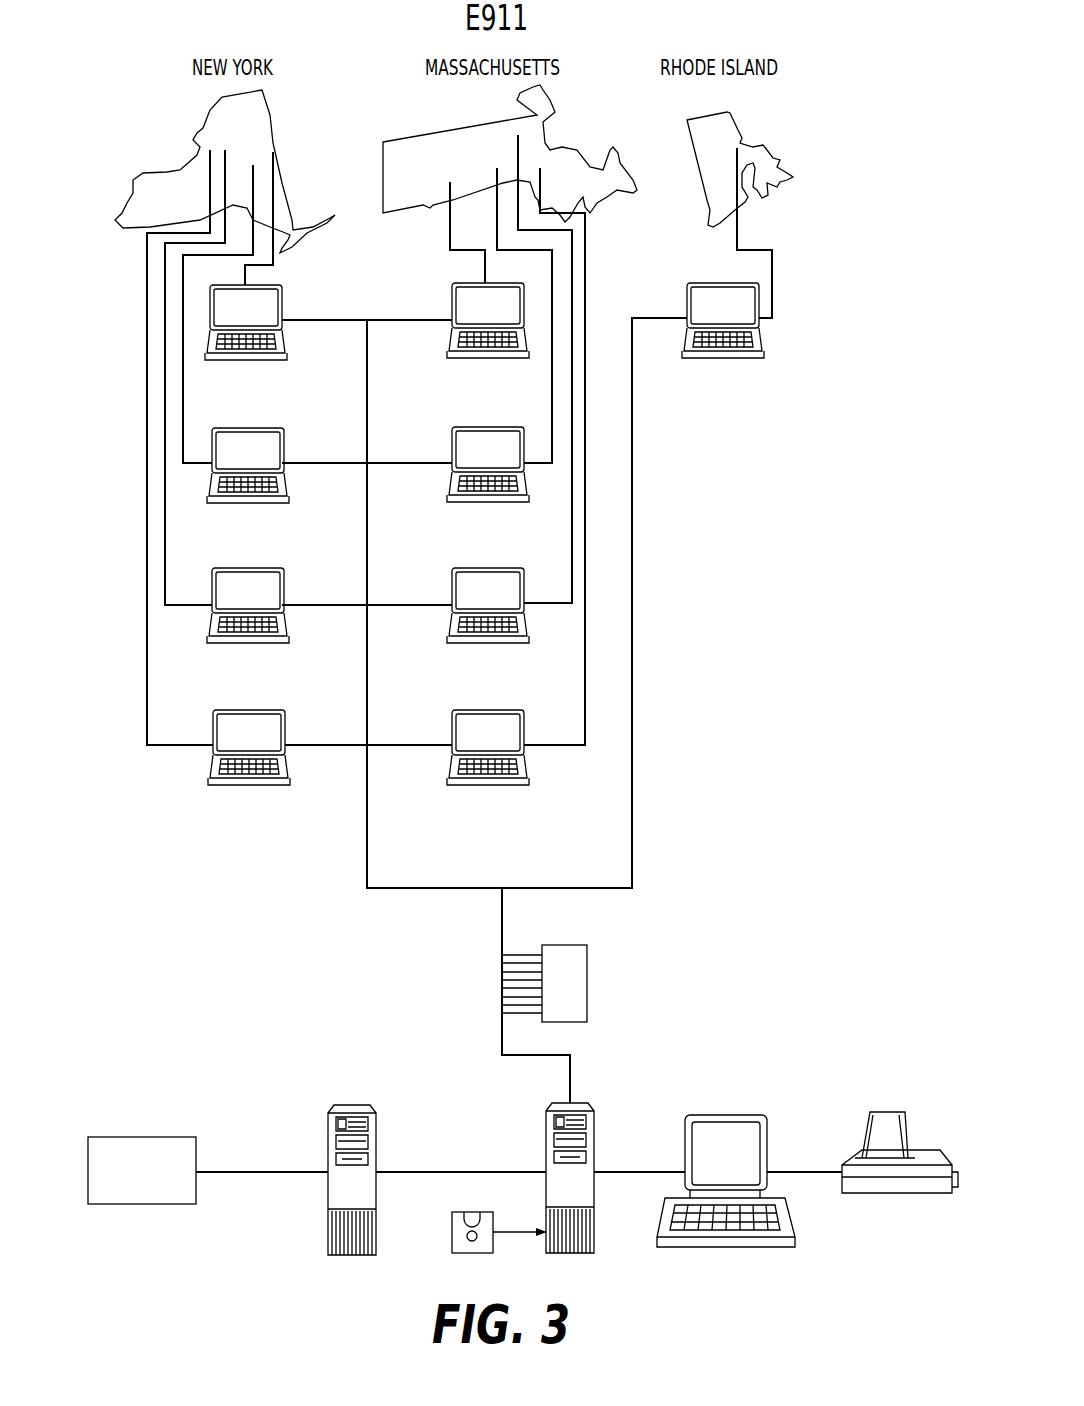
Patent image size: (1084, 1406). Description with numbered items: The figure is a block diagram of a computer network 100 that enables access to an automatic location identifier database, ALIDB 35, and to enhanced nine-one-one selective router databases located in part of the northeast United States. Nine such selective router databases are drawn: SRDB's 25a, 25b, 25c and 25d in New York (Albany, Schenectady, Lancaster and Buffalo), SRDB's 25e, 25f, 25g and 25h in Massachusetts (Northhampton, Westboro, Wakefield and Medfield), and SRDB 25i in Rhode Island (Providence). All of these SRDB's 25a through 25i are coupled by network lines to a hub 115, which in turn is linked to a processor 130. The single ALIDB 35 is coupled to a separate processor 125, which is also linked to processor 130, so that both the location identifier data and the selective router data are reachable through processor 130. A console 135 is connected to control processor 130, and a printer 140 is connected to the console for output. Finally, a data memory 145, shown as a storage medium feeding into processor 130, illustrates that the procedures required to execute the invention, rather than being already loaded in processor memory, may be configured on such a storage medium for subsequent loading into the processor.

The SRDB 25a is at (282, 303).
The SRDB 25b is at (284, 447).
The SRDB 25c is at (284, 587).
The SRDB 25d is at (285, 730).
The SRDB 25e is at (452, 303).
The SRDB 25f is at (452, 446).
The SRDB 25g is at (452, 586).
The SRDB 25h is at (452, 730).
The SRDB 25i is at (687, 303).
The computer network 100 is at (840, 263).
The hub 115 is at (588, 953).
The ALIDB 35 is at (135, 1137).
The processor 125 is at (377, 1118).
The processor 130 is at (595, 1120).
The console 135 is at (737, 1115).
The printer 140 is at (910, 1130).
The data memory 145 is at (465, 1253).